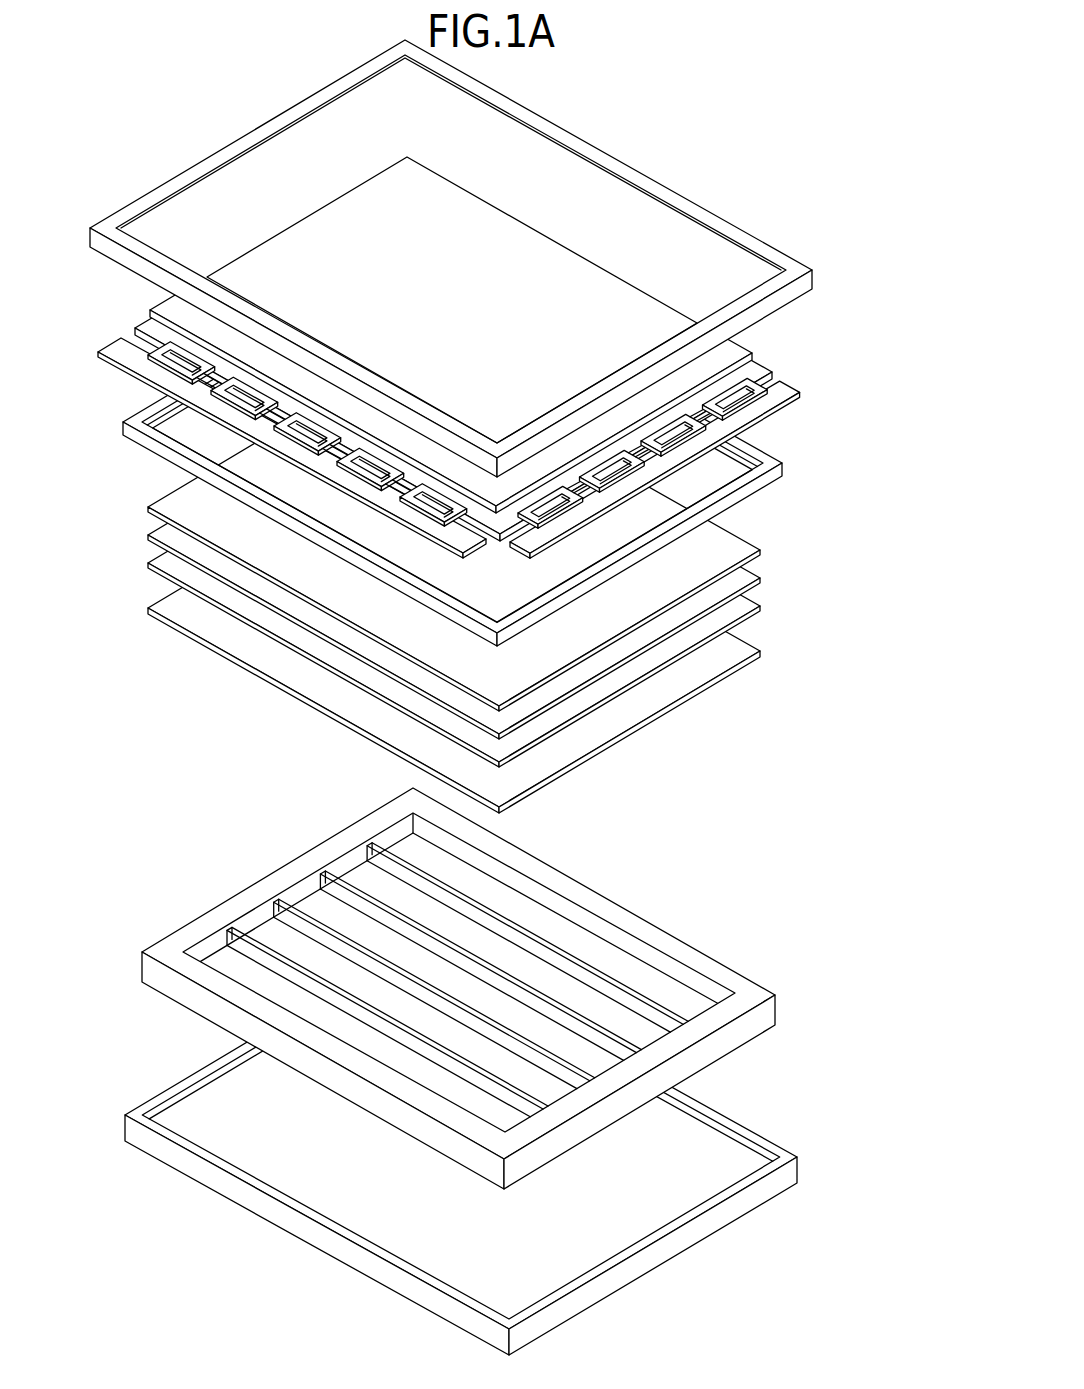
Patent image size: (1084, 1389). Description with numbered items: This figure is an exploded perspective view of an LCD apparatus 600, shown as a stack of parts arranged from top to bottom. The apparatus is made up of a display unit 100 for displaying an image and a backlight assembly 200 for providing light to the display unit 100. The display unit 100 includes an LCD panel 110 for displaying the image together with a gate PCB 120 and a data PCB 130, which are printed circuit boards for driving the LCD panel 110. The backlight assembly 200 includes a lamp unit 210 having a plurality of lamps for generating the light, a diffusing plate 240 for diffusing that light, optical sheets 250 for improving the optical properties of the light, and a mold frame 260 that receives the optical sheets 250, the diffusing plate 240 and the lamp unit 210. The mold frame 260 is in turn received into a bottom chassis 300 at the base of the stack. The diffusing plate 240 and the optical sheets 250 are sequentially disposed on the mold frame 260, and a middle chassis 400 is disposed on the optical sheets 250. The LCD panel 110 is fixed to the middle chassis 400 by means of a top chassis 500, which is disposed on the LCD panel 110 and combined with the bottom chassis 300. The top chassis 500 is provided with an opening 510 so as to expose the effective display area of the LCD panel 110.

The LCD apparatus 600 is at (642, 87).
The top chassis 500 is at (456, 258).
The opening 510 is at (636, 220).
The display unit 100 is at (517, 357).
The LCD panel 110 is at (737, 354).
The gate PCB 120 is at (776, 381).
The data PCB 130 is at (120, 342).
The middle chassis 400 is at (790, 467).
The backlight assembly 200 is at (535, 770).
The optical sheets 250 is at (483, 559).
The diffusing plate 240 is at (697, 693).
The mold frame 260 is at (779, 1010).
The lamp unit 210 is at (585, 968).
The bottom chassis 300 is at (797, 1169).